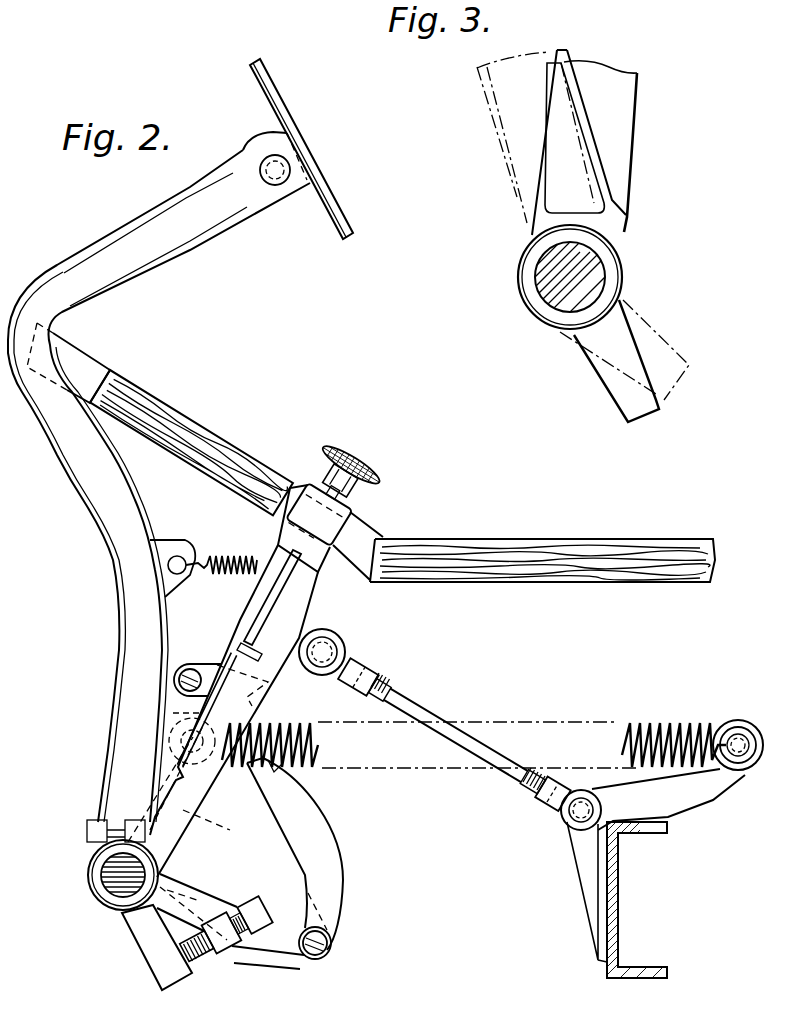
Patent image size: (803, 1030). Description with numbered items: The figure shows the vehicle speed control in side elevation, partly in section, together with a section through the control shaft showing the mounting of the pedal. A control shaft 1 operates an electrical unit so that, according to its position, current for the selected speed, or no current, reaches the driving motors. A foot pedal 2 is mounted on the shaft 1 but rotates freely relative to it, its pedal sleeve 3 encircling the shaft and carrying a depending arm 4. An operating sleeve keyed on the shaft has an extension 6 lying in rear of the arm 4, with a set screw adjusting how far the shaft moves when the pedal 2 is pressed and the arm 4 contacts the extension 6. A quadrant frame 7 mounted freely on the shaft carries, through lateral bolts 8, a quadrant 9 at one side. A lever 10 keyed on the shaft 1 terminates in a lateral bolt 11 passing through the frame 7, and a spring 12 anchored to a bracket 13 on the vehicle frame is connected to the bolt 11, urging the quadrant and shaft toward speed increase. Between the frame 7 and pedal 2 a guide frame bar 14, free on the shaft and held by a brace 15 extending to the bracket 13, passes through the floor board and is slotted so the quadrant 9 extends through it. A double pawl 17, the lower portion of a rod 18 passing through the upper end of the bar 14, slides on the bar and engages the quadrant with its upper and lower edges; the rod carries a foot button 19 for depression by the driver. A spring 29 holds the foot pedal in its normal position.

In FIG. 2, the control shaft 1 is at (110, 890).
In FIG. 3, the control shaft 1 is at (553, 305).
In FIG. 2, the foot pedal 2 is at (117, 628).
In FIG. 3, the foot pedal 2 is at (634, 147).
In FIG. 2, the pedal sleeve 3 is at (87, 870).
In FIG. 3, the pedal sleeve 3 is at (622, 266).
In FIG. 2, the depending arm 4 is at (160, 963).
In FIG. 3, the depending arm 4 is at (635, 403).
In FIG. 2, the extension 6 is at (194, 893).
In FIG. 2, the quadrant frame 7 is at (270, 955).
In FIG. 2, the lateral bolts 8 is at (192, 666).
In FIG. 2, the quadrant 9 is at (340, 877).
In FIG. 2, the lever 10 is at (207, 817).
In FIG. 2, the lateral bolt 11 is at (210, 760).
In FIG. 2, the spring 12 is at (306, 726).
In FIG. 2, the bracket 13 is at (713, 800).
In FIG. 2, the guide frame bar 14 is at (318, 595).
In FIG. 2, the brace 15 is at (413, 700).
In FIG. 2, the double pawl 17 is at (173, 713).
In FIG. 2, the rod 18 is at (263, 608).
In FIG. 2, the foot button 19 is at (360, 465).
In FIG. 2, the spring 29 is at (222, 556).